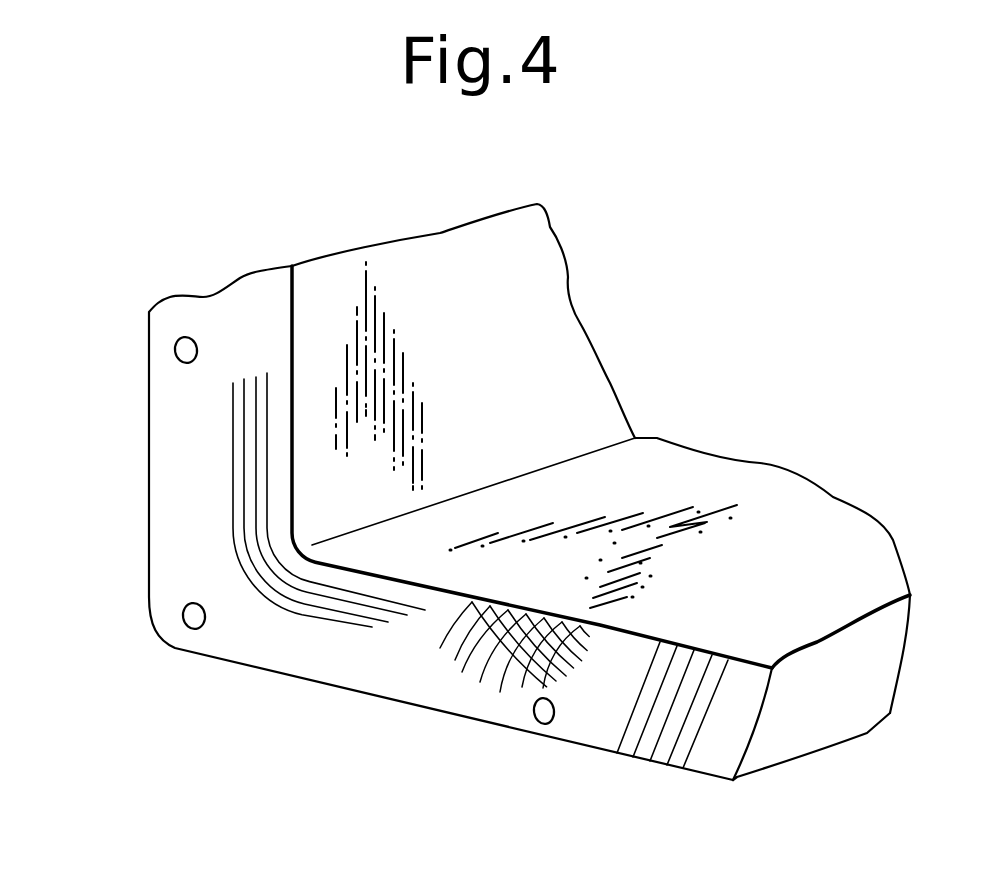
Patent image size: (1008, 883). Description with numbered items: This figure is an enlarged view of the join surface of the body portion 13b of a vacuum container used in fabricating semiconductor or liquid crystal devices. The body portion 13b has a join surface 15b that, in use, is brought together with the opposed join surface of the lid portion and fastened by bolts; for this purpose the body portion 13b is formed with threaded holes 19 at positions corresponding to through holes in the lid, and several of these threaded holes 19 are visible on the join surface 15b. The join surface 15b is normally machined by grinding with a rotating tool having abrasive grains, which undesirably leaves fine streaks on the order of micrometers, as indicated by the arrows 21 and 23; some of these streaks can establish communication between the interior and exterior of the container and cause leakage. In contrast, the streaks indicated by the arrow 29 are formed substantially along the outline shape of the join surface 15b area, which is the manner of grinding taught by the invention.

The body portion 13b is at (140, 403).
The join surface 15b is at (323, 665).
The threaded holes 19 is at (184, 628).
The fine streaks 21 is at (490, 694).
The fine streaks 23 is at (694, 762).
The streaks formed along outline shape 29 is at (224, 488).